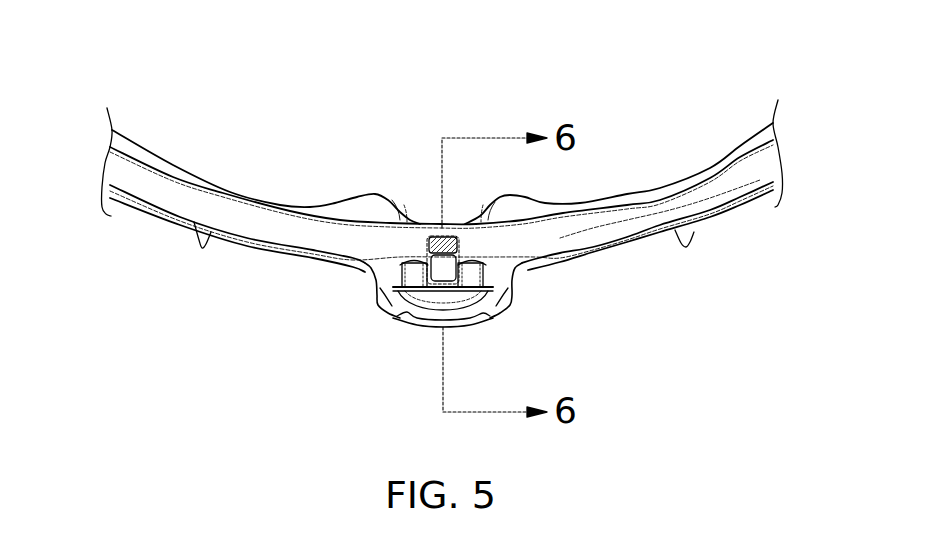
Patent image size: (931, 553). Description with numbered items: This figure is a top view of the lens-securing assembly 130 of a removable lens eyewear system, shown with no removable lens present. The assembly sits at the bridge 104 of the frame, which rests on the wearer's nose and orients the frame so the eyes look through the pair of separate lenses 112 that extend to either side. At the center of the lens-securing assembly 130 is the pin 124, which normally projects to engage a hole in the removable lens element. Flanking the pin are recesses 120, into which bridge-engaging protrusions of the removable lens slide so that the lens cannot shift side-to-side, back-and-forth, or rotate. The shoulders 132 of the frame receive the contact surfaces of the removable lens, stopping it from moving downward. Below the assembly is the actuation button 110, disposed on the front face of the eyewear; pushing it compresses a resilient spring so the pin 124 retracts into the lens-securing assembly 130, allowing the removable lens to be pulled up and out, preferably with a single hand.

The lenses 112 is at (199, 246).
The pin 124 is at (439, 236).
The bridge 104 is at (437, 256).
The recesses 120 is at (420, 263).
The shoulders 132 is at (376, 294).
The lens-securing assembly 130 is at (533, 317).
The actuation button 110 is at (421, 320).